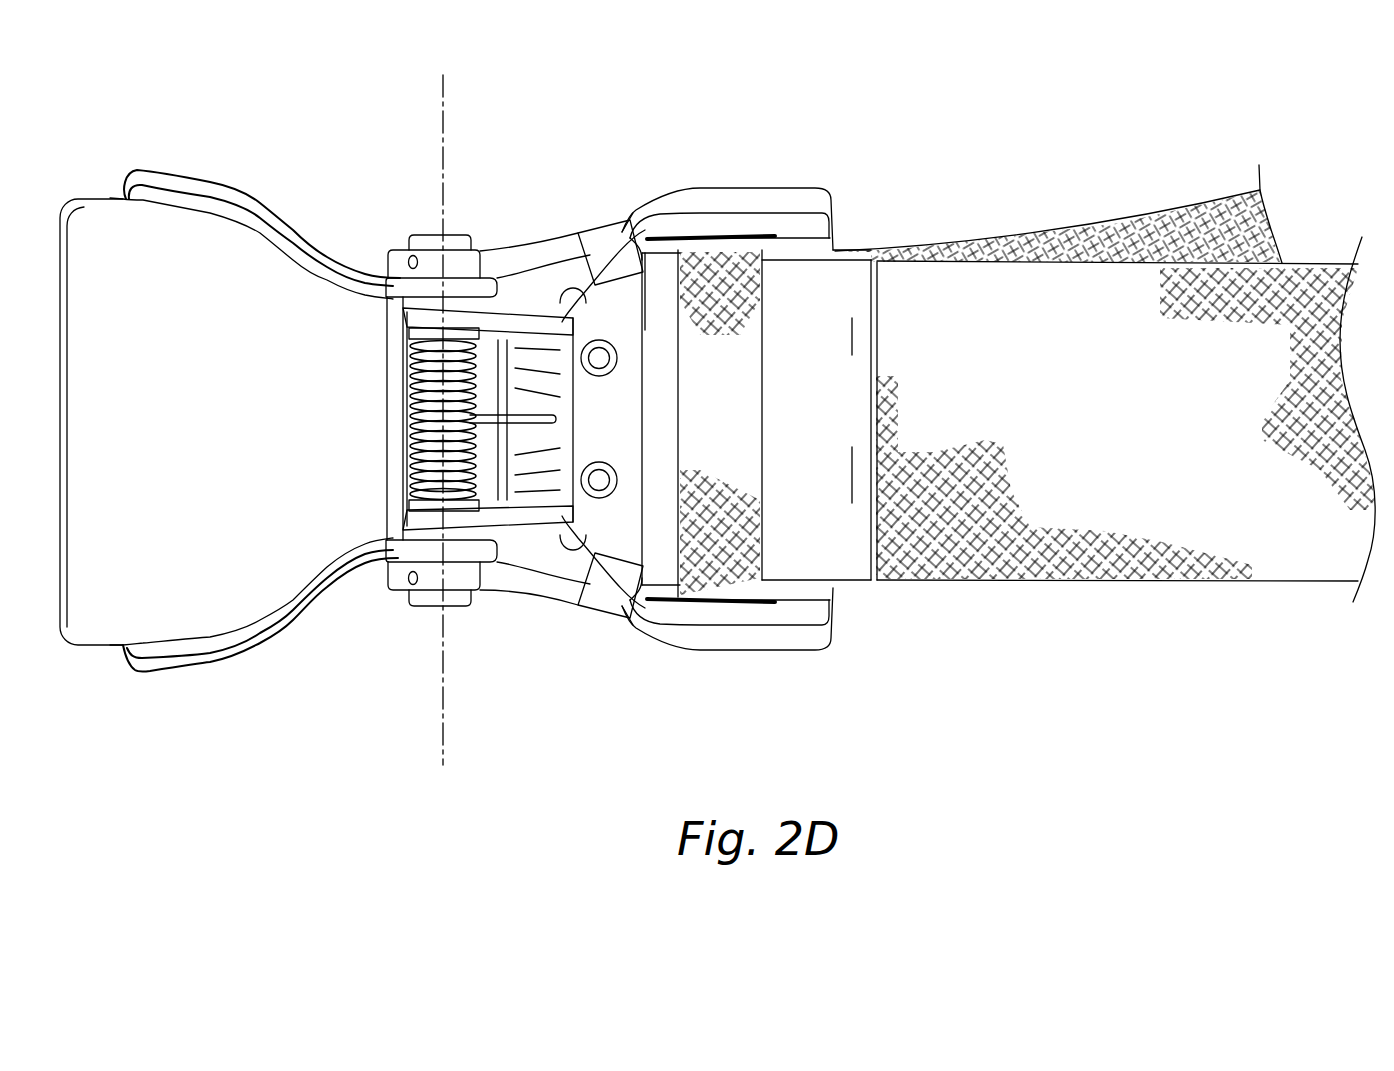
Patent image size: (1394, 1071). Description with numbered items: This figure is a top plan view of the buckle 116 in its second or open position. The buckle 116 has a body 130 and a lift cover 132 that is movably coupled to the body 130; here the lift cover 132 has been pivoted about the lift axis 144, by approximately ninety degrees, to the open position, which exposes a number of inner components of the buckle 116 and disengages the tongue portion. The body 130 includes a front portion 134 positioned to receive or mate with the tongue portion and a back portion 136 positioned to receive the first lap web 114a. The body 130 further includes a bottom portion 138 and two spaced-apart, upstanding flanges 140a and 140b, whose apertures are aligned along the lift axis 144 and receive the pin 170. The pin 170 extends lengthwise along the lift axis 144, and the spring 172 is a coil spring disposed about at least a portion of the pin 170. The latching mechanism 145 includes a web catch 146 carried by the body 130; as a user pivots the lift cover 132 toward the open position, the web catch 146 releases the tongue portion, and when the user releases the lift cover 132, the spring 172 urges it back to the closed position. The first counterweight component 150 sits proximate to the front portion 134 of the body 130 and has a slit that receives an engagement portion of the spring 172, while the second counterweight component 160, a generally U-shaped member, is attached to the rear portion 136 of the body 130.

The first lap web 114a is at (1113, 308).
The buckle 116 is at (828, 104).
The body 130 is at (708, 193).
The lift cover 132 is at (208, 190).
The front portion 134 is at (382, 576).
The back portion 136 is at (843, 590).
The bottom portion 138 is at (603, 420).
The first flange 140a is at (738, 642).
The second flange 140b is at (752, 197).
The lift axis 144 is at (447, 120).
The latching mechanism 145 is at (543, 312).
The web catch 146 is at (592, 268).
The first counterweight component 150 is at (490, 353).
The second counterweight component 160 is at (840, 303).
The pin 170 is at (458, 234).
The spring 172 is at (405, 380).